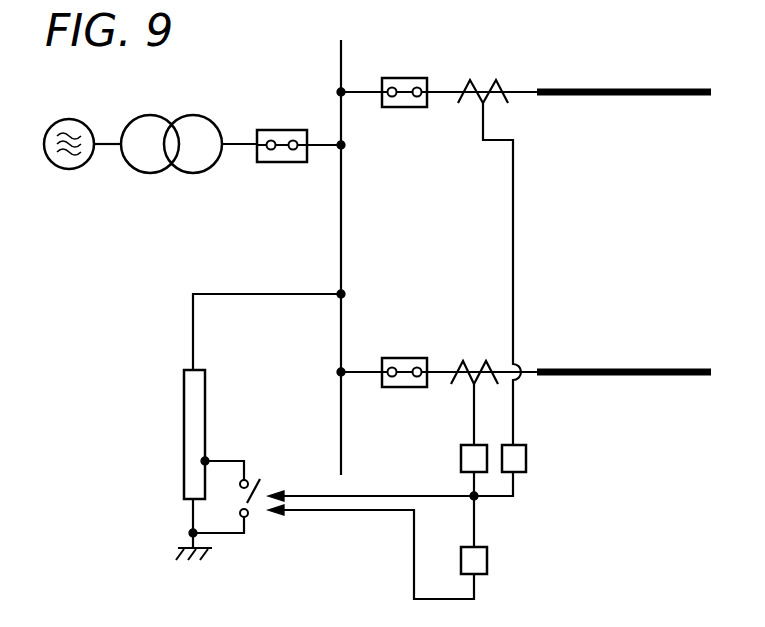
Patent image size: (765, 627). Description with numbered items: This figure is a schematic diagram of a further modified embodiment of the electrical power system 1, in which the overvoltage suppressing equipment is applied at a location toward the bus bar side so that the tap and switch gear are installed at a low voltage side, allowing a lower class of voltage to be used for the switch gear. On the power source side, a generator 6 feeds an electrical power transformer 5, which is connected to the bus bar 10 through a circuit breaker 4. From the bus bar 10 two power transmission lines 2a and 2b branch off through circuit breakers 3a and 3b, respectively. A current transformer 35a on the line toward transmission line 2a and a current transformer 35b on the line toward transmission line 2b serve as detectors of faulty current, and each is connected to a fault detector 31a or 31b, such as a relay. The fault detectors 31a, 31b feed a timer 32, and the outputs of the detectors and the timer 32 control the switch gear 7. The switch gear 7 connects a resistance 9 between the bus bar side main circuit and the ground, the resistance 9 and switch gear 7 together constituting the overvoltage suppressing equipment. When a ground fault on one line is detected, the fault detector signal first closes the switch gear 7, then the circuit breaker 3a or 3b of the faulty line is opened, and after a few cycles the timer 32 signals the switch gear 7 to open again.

The electrical power system 1 is at (334, 80).
The power transmission line 2a is at (621, 88).
The power transmission line 2b is at (612, 368).
The circuit breaker 3a is at (415, 78).
The circuit breaker 3b is at (409, 355).
The circuit breaker 4 is at (268, 163).
The electrical power transformer 5 is at (183, 173).
The generator 6 is at (69, 170).
The switch gear 7 is at (257, 505).
The resistance 9 is at (208, 385).
The bus bar 10 is at (342, 200).
The fault detector 31a is at (527, 449).
The fault detector 31b is at (458, 455).
The timer 32 is at (489, 555).
The current transformer 35a is at (483, 78).
The current transformer 35b is at (469, 356).